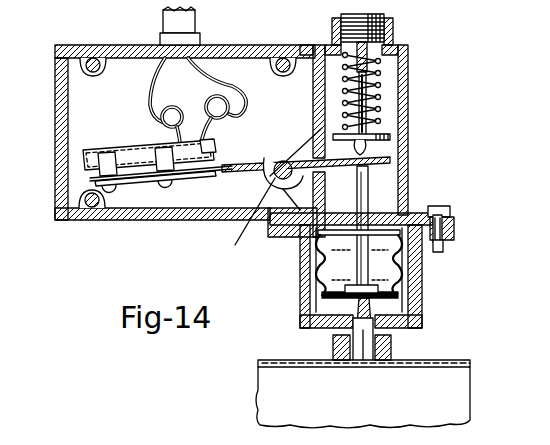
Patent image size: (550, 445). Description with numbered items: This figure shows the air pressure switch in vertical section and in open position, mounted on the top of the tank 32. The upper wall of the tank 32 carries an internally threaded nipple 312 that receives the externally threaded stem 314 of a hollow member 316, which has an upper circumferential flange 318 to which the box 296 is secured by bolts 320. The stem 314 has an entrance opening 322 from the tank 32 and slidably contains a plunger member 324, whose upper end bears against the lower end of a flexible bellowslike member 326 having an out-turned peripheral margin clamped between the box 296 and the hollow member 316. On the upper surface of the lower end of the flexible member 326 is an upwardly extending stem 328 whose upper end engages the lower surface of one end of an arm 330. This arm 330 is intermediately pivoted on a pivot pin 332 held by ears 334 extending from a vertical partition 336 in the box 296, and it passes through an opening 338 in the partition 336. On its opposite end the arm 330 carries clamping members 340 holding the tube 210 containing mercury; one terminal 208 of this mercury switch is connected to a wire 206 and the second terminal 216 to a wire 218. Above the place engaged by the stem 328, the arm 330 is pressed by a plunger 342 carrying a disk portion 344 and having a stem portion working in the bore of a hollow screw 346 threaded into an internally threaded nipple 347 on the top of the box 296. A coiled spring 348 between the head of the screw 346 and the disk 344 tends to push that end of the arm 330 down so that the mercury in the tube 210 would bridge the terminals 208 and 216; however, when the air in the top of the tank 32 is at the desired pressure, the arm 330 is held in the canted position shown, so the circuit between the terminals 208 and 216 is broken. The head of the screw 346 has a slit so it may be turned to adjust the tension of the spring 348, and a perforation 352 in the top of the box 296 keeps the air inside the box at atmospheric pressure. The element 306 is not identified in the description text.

The mounting stud 306 is at (166, 14).
The box 296 is at (57, 90).
The wire 218 is at (156, 86).
The tube 210 is at (130, 150).
The wire 206 is at (247, 103).
The terminal 208 is at (216, 150).
The second terminal 216 is at (193, 175).
The clamping members 340 is at (145, 178).
The pivot pin 332 is at (235, 246).
The ears 334 is at (284, 158).
The opening 338 is at (290, 155).
The vertical partition 336 is at (314, 86).
The perforation 352 is at (330, 45).
The hollow screw 346 is at (385, 15).
The internally threaded nipple 347 is at (395, 36).
The coiled spring 348 is at (380, 89).
The plunger 342 is at (368, 128).
The disk portion 344 is at (392, 137).
The arm 330 is at (392, 161).
The stem 328 is at (370, 196).
The bolts 320 is at (447, 212).
The upper circumferential flange 318 is at (455, 236).
The flexible bellowslike member 326 is at (300, 270).
The hollow member 316 is at (424, 285).
The plunger member 324 is at (353, 330).
The externally threaded stem 314 is at (375, 332).
The internally threaded nipple 312 is at (392, 349).
The entrance opening 322 is at (362, 367).
The tank 32 is at (455, 378).